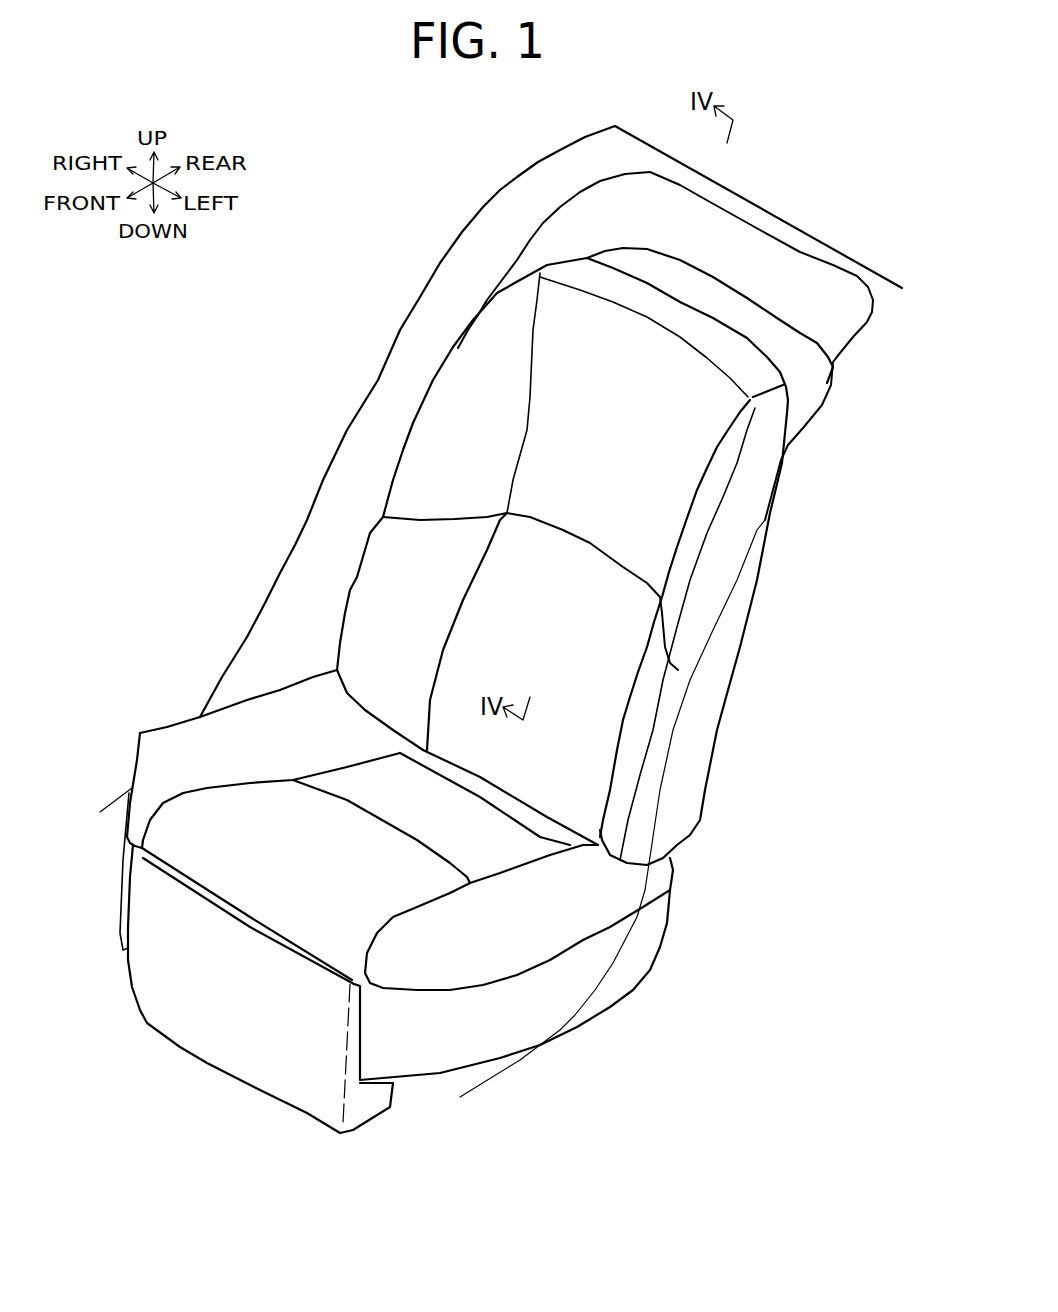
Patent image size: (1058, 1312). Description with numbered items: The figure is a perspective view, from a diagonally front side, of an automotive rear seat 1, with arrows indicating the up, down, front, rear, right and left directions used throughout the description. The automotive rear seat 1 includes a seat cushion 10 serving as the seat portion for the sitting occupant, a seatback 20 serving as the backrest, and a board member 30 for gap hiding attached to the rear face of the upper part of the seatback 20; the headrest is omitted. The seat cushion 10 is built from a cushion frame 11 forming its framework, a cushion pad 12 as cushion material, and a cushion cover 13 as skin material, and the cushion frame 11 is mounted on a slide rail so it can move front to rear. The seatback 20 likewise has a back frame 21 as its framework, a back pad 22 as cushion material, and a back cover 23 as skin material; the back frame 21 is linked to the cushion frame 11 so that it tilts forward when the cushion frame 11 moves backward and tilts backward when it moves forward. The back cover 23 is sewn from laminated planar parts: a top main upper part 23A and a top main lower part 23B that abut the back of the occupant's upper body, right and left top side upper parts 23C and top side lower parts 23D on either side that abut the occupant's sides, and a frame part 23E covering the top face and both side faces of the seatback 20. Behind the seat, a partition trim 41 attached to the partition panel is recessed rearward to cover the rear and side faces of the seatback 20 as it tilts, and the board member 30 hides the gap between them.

The automotive rear seat 1 is at (299, 280).
The seat cushion 10 is at (173, 750).
The cushion frame 11 is at (233, 753).
The cushion pad 12 is at (252, 720).
The cushion cover 13 is at (282, 710).
The seatback 20 is at (430, 433).
The back frame 21 is at (370, 617).
The back pad 22 is at (380, 577).
The back cover 23 is at (393, 540).
The top main upper part 23A is at (648, 470).
The top main lower part 23B is at (567, 643).
The top side upper part 23C is at (470, 377).
The top side lower part 23D is at (430, 550).
The frame part 23E is at (703, 337).
The board member 30 is at (662, 270).
The partition trim 41 is at (723, 247).